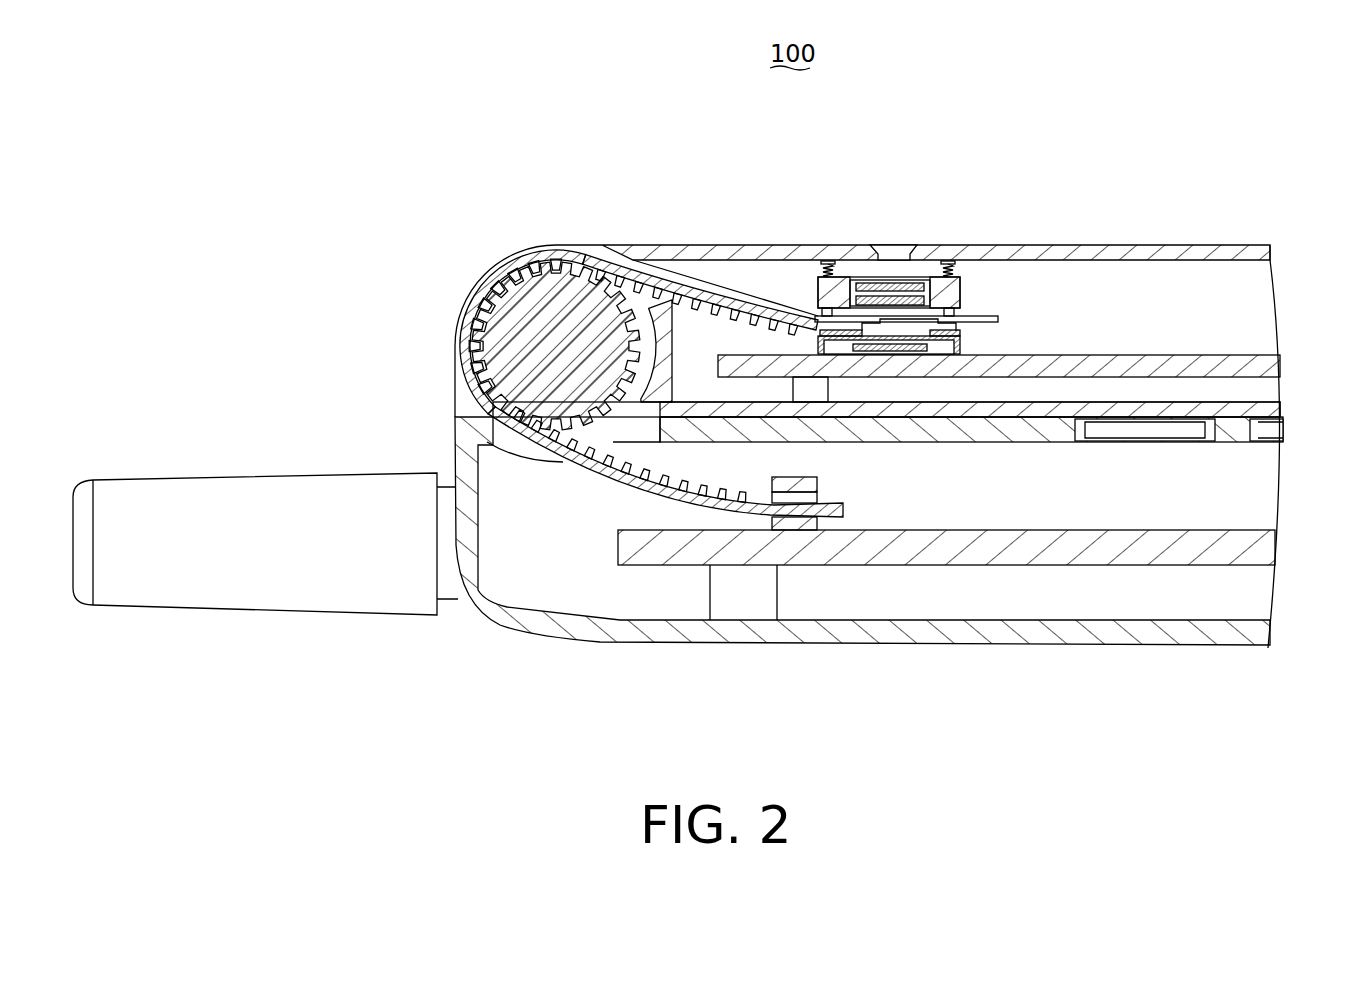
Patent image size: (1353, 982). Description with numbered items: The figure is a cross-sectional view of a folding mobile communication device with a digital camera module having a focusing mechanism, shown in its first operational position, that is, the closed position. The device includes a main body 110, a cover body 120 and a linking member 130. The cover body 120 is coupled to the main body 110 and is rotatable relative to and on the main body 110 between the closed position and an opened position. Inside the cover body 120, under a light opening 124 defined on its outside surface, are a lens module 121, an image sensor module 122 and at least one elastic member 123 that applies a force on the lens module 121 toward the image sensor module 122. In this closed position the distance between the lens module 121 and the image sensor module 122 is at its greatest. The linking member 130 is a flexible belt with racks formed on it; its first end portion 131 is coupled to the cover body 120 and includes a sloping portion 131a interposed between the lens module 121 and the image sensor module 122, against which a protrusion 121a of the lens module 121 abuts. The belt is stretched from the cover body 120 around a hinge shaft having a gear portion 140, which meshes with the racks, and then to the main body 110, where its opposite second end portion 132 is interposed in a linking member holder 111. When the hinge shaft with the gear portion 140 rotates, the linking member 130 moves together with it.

The main body 110 is at (1255, 490).
The linking member holder 111 is at (806, 527).
The cover body 120 is at (1225, 312).
The lens module 121 is at (915, 290).
The protrusion 121a is at (957, 316).
The image sensor module 122 is at (962, 347).
The elastic member 123 is at (952, 262).
The light opening 124 is at (878, 247).
The linking member 130 is at (703, 305).
The first end portion 131 is at (805, 321).
The sloping portion 131a is at (985, 322).
The second end portion 132 is at (837, 512).
The gear portion 140 is at (540, 335).